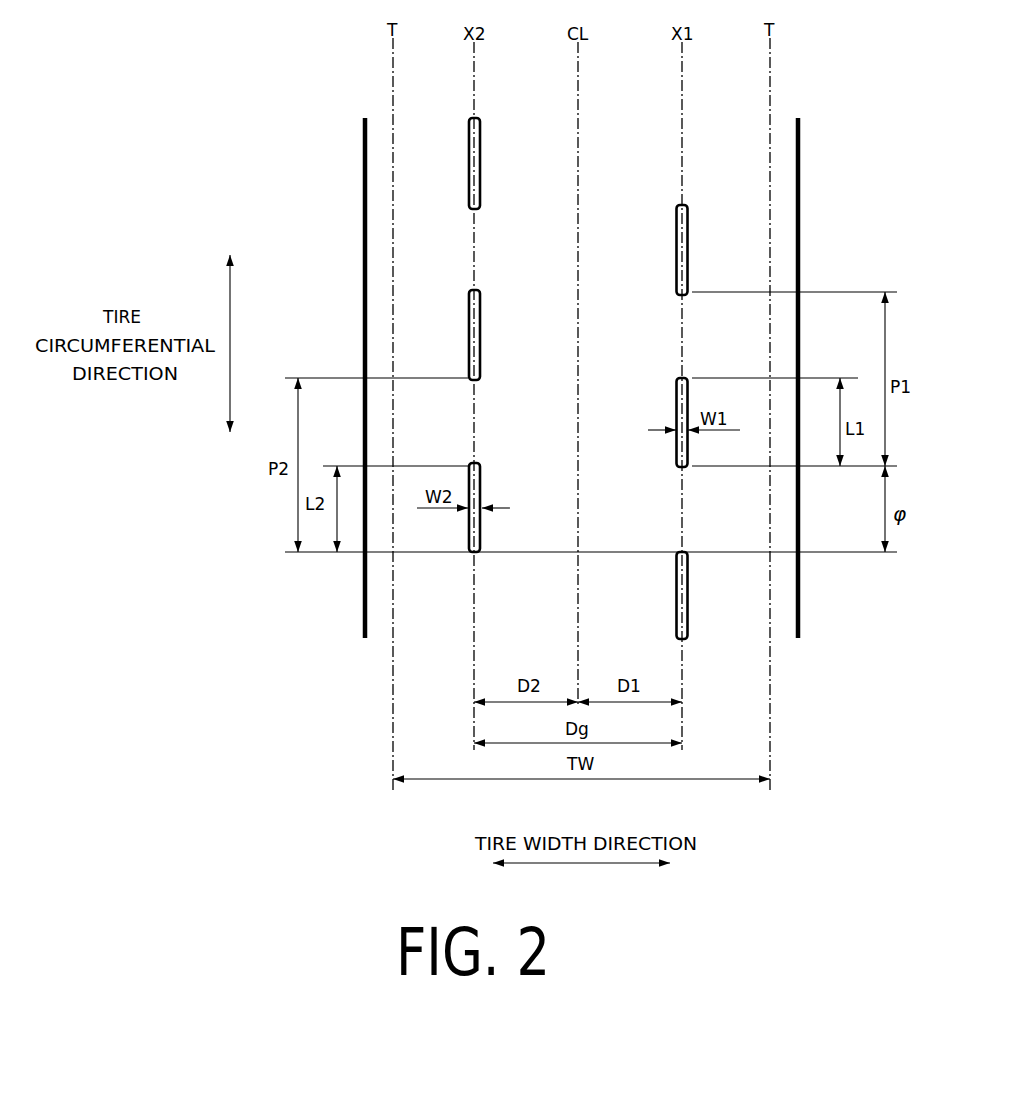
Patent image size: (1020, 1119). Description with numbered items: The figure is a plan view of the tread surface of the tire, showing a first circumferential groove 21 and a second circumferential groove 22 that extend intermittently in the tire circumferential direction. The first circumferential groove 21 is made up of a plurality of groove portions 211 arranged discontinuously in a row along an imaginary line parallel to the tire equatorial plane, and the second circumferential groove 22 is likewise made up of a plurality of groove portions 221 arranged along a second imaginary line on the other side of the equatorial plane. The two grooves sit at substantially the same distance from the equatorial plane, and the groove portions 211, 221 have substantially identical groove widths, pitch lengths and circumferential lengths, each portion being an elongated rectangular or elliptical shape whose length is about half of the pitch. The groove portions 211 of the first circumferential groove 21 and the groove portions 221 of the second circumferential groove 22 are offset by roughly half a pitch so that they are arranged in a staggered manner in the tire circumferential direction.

The first circumferential groove 21 is at (706, 87).
The groove portion 211 is at (688, 206).
The second circumferential groove 22 is at (490, 82).
The groove portion 221 is at (472, 119).